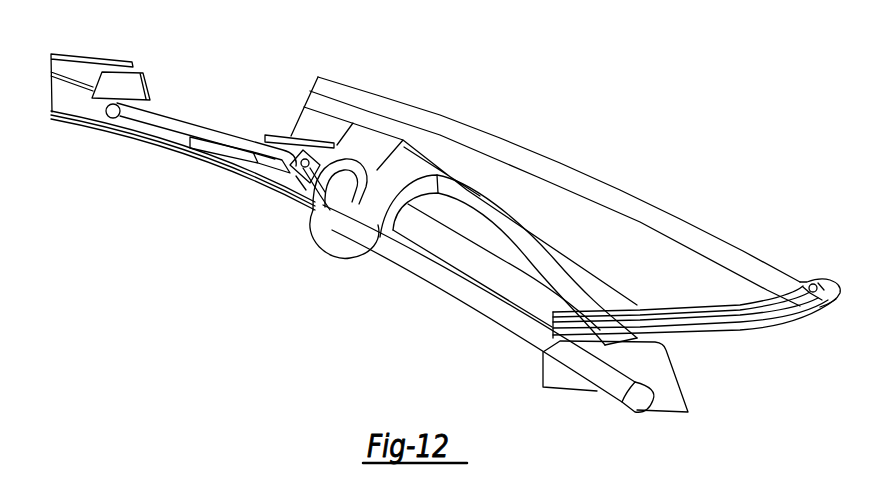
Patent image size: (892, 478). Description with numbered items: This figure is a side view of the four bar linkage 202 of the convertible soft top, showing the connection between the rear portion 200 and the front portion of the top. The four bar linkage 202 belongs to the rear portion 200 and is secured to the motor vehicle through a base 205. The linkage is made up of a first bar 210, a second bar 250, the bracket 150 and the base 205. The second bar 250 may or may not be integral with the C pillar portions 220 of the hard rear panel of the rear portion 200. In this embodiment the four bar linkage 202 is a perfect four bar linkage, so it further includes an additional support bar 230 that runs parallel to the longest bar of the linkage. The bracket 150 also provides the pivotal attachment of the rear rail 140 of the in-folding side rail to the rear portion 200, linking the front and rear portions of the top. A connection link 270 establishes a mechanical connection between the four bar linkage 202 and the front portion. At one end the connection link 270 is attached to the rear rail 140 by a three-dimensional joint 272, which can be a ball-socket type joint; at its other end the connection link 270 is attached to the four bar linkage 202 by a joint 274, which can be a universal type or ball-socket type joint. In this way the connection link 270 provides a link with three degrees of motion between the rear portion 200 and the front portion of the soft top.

The rear rail 140 is at (78, 105).
The bracket 150 is at (293, 136).
The rear portion 200 is at (560, 118).
The four bar linkage 202 is at (475, 331).
The base 205 is at (688, 402).
The first bar 210 is at (447, 285).
The C pillar portions 220 is at (727, 322).
The additional support bar 230 is at (530, 250).
The second bar 250 is at (607, 184).
The connection link 270 is at (231, 140).
The three-dimensional joint 272 is at (112, 118).
The joint 274 is at (303, 185).